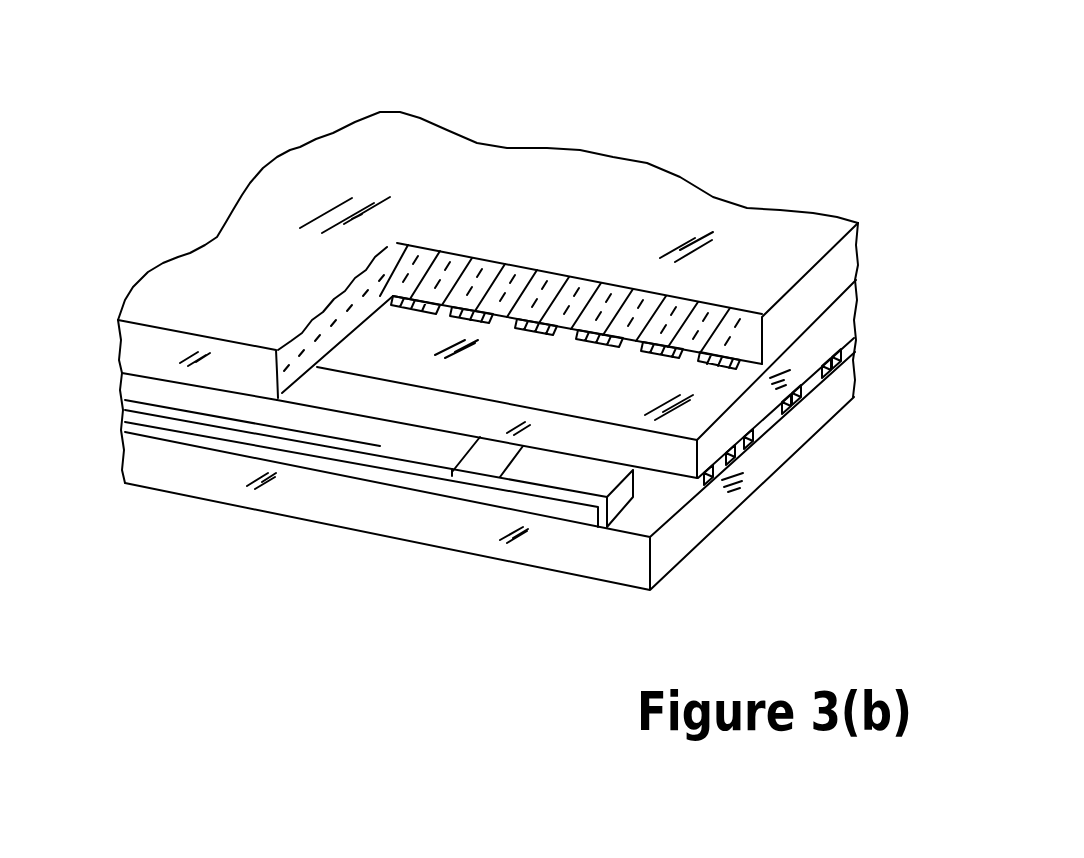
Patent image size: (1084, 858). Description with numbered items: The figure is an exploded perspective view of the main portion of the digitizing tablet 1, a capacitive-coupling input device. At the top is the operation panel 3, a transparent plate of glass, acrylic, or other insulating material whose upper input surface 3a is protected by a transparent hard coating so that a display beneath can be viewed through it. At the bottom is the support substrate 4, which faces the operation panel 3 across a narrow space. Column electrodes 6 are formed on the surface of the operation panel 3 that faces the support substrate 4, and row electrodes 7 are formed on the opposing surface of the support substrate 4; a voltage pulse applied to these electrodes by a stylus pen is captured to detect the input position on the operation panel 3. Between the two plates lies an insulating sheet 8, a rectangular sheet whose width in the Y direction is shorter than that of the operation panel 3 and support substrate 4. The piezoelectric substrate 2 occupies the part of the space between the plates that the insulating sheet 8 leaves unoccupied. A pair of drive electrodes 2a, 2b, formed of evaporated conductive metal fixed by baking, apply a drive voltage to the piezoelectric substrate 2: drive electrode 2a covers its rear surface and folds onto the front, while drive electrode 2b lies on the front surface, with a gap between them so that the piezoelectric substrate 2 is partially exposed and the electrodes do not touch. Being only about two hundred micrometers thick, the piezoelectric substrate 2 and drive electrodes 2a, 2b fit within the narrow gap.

The digitizing tablet 1 is at (772, 128).
The piezoelectric substrate 2 is at (145, 417).
The drive electrode 2a is at (497, 503).
The drive electrode 2b is at (397, 435).
The operation panel 3 is at (252, 255).
The input surface 3a is at (589, 184).
The support substrate 4 is at (207, 472).
The column electrodes 6 is at (406, 300).
The row electrodes 7 is at (725, 463).
The insulating sheet 8 is at (832, 328).